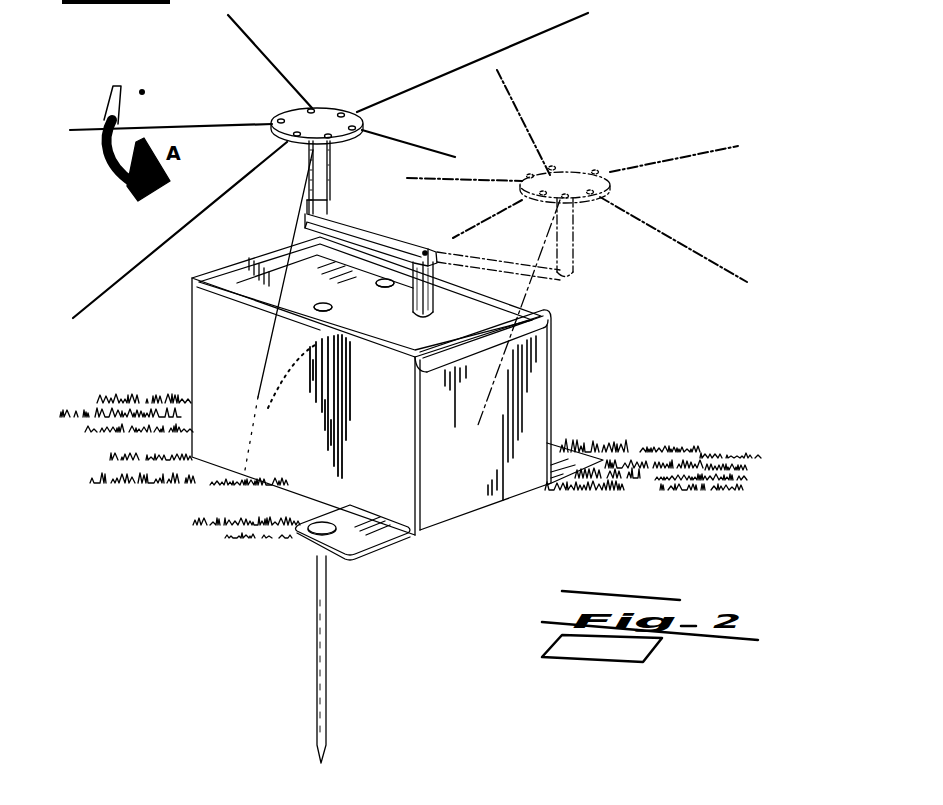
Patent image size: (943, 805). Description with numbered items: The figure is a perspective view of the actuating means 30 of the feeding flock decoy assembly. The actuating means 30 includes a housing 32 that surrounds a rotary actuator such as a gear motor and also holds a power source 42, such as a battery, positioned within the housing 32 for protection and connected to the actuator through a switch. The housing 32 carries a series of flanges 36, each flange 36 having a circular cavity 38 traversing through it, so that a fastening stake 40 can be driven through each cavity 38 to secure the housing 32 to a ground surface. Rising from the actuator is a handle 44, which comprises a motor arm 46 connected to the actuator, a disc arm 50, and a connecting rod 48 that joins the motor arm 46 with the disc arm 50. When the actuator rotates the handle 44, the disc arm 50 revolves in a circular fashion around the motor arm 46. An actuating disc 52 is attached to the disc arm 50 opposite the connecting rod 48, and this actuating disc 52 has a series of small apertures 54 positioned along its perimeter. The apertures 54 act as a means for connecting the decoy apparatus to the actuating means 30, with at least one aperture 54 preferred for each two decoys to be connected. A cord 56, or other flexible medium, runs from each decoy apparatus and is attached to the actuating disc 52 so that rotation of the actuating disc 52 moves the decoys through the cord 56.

The actuating means 30 is at (634, 75).
The housing 32 is at (238, 363).
The flanges 36 is at (175, 403).
The circular cavities 38 is at (557, 447).
The fastening stakes 40 is at (317, 619).
The power source 42 is at (272, 290).
The handle 44 is at (423, 230).
The motor arm 46 is at (432, 290).
The connecting rod 48 is at (363, 226).
The disc arm 50 is at (331, 173).
The actuating disc 52 is at (327, 108).
The apertures 54 is at (295, 107).
The cord 56 is at (188, 125).